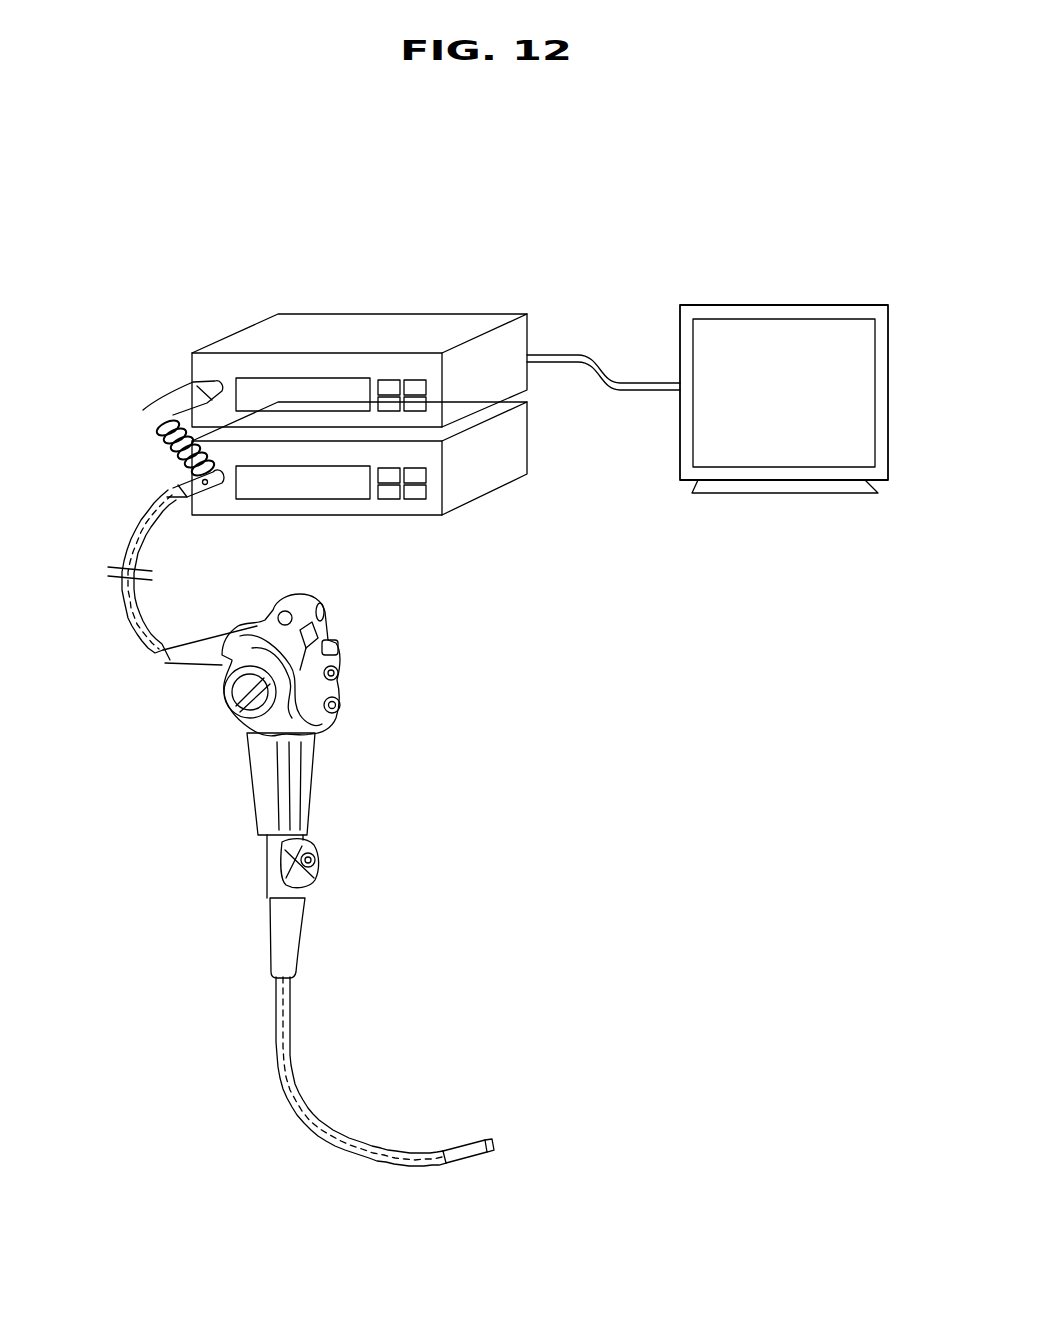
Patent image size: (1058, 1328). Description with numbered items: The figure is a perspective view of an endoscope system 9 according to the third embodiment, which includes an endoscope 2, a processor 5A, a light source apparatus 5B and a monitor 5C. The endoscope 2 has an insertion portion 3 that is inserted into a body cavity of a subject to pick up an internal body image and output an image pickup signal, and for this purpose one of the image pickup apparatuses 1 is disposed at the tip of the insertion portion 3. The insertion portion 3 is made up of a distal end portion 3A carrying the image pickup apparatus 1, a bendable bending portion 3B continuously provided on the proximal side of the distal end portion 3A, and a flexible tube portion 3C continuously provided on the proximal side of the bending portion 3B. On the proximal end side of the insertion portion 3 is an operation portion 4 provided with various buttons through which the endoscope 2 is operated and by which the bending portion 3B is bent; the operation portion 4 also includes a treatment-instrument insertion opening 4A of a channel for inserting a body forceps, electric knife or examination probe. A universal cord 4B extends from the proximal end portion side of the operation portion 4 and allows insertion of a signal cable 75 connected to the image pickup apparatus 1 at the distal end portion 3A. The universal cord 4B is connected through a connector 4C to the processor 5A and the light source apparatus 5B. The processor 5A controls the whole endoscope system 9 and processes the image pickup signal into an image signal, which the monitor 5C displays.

The endoscope system 9 is at (724, 165).
The processor 5A is at (510, 313).
The light source apparatus 5B is at (527, 437).
The monitor 5C is at (786, 305).
The connector 4C is at (190, 478).
The signal cable 75 is at (137, 535).
The universal cord 4B is at (125, 605).
The operation portion 4 is at (338, 688).
The endoscope 2 is at (436, 740).
The treatment-instrument insertion opening 4A is at (318, 858).
The insertion portion 3 is at (290, 1025).
The flexible tube portion 3C is at (330, 1137).
The bending portion 3B is at (470, 1140).
The distal end portion 3A is at (485, 1157).
The image pickup apparatus 1 is at (488, 1132).